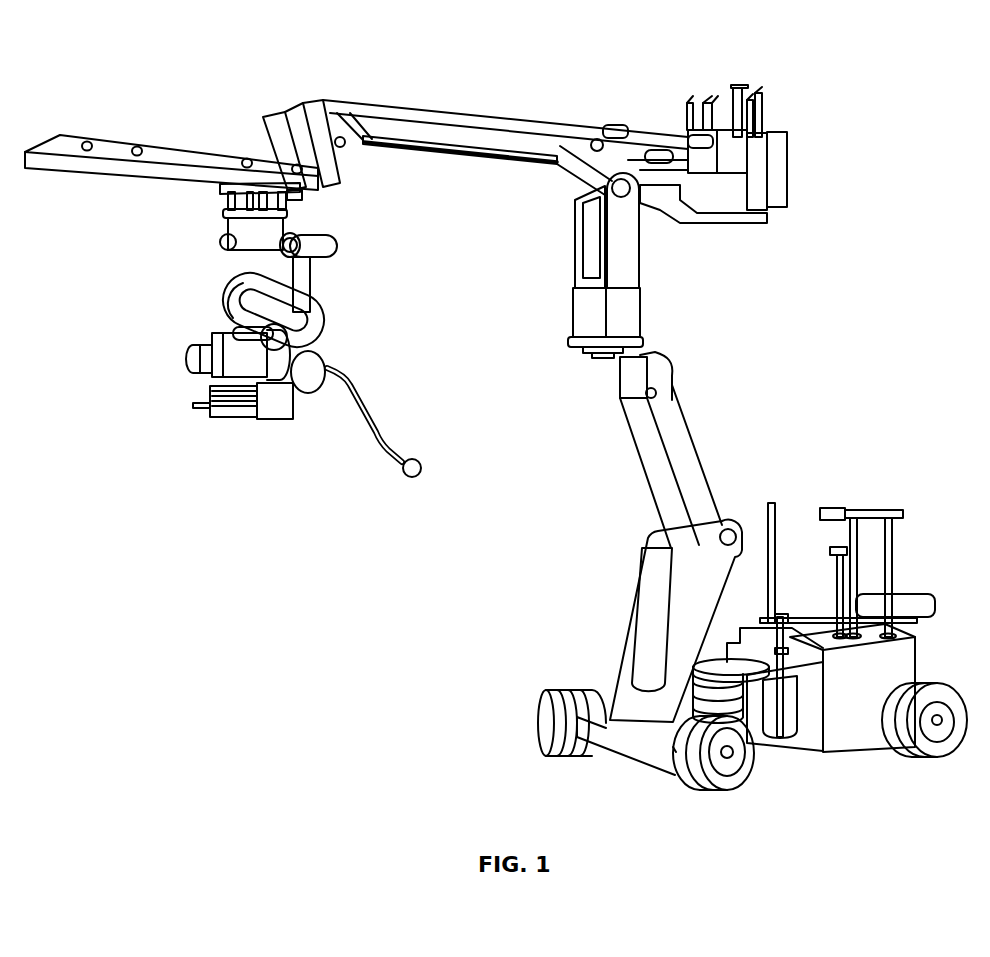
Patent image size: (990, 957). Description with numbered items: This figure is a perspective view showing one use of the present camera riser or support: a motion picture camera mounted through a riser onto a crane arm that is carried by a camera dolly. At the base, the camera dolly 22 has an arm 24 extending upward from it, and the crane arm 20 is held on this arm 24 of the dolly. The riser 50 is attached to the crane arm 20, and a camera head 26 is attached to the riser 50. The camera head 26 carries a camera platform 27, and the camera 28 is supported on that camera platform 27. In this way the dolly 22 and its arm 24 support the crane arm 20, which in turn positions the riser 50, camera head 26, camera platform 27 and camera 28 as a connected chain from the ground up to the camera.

The crane arm 20 is at (473, 154).
The camera dolly 22 is at (795, 612).
The arm 24 is at (700, 460).
The camera head 26 is at (312, 283).
The camera platform 27 is at (253, 418).
The camera 28 is at (183, 355).
The riser 50 is at (222, 198).